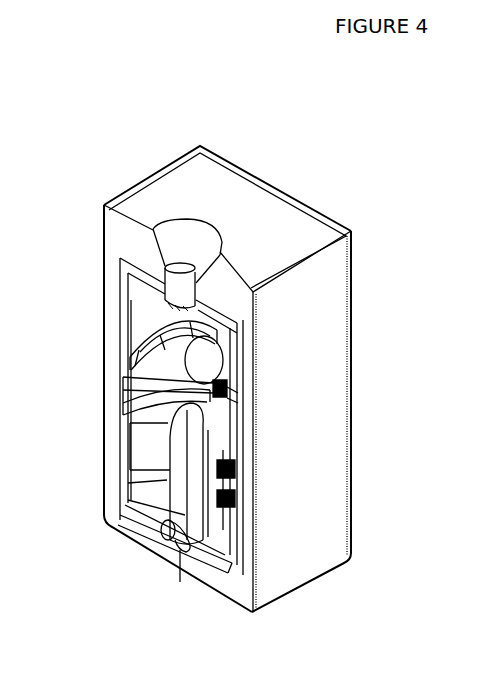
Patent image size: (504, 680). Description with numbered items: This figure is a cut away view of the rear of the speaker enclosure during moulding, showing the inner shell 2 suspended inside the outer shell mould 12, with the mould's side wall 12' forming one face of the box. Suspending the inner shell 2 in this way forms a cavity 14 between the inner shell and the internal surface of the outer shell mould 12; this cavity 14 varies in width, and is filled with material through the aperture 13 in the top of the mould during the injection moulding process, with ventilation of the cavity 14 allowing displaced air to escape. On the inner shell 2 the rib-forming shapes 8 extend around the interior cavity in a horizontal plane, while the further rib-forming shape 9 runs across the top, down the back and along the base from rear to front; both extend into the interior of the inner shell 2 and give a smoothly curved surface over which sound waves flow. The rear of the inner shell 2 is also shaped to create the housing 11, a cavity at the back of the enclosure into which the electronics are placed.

The inner shell 2 is at (175, 368).
The rib-forming shapes 8 is at (140, 343).
The further rib-forming shape 9 is at (173, 522).
The housing 11 is at (178, 470).
The outer shell mould 12 is at (227, 379).
The housing side wall 12' is at (301, 421).
The aperture 13 is at (186, 241).
The cavity 14 is at (120, 331).